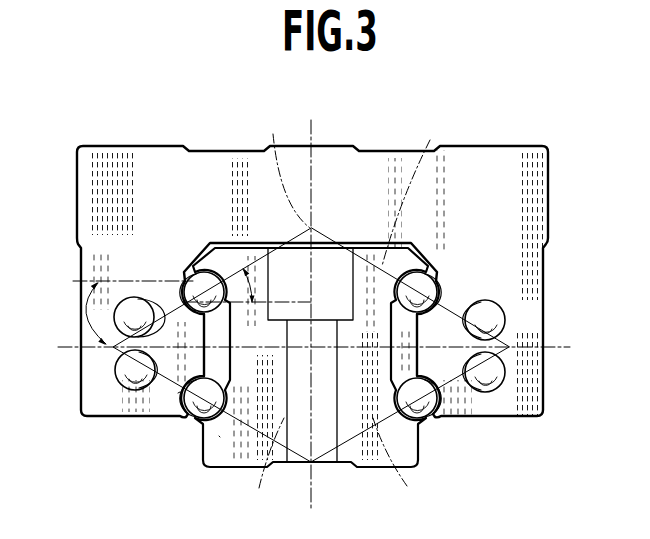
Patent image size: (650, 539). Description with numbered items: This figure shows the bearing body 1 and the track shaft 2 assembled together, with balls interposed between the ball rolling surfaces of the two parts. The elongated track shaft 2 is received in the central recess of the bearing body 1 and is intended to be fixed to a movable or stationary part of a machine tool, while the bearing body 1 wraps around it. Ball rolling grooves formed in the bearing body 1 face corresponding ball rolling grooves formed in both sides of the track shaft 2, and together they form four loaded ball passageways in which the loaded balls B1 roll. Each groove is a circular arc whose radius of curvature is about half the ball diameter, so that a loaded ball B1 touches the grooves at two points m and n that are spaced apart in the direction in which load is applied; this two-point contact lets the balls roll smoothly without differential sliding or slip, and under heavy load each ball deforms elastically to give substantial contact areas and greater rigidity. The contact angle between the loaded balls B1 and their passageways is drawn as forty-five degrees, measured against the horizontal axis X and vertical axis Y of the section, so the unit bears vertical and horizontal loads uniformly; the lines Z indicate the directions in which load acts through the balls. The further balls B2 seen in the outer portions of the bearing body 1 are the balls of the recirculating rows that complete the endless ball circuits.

The bearing body 1 is at (369, 145).
The track shaft 2 is at (368, 483).
The loaded balls B1 is at (448, 452).
The recirculating balls in return passages B2 is at (573, 381).
The horizontal axis X is at (313, 348).
The vertical axis Y is at (307, 313).
The load lines Z is at (345, 311).
The contact point m is at (178, 393).
The contact point n is at (220, 437).